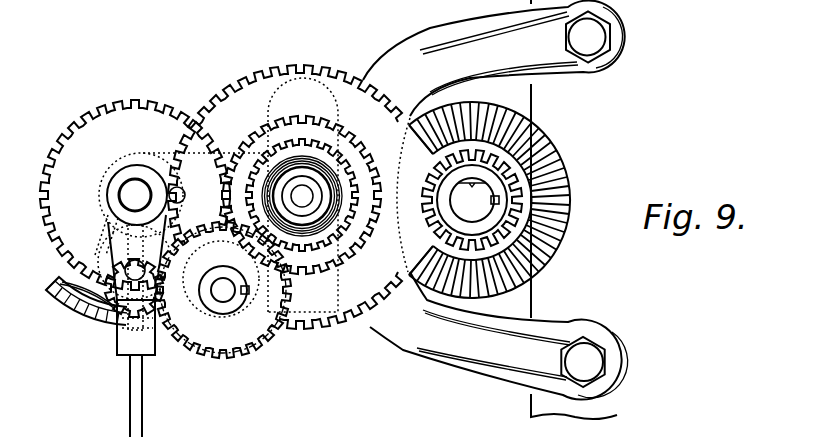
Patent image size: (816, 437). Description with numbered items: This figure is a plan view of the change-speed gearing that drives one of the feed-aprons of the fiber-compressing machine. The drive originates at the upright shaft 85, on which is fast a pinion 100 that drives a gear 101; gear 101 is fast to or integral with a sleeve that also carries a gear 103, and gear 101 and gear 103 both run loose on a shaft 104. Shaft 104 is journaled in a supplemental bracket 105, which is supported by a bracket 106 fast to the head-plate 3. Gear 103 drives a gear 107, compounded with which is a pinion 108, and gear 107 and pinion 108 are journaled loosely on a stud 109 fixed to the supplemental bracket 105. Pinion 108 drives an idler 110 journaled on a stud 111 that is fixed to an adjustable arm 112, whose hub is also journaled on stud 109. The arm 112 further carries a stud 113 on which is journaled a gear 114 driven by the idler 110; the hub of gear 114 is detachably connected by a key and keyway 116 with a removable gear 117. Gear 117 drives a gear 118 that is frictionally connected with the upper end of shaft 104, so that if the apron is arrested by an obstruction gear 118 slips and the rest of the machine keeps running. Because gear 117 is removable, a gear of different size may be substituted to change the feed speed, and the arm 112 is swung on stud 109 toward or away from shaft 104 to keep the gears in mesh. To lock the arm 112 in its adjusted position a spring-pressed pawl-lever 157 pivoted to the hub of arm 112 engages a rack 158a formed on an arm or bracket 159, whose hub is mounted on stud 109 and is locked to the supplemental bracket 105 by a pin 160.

The head-plate 3 is at (574, 209).
The upright shaft 85 is at (450, 182).
The pinion 100 is at (513, 224).
The gear 101 is at (340, 72).
The gear 103 is at (416, 131).
The shaft 104 is at (306, 201).
The supplemental bracket 105 is at (178, 154).
The bracket 106 is at (495, 199).
The gear 107 is at (78, 130).
The pinion 108 is at (107, 170).
The stud 109 is at (119, 196).
The idler 110 is at (108, 300).
The stud 111 is at (125, 270).
The adjustable arm 112 is at (204, 315).
The stud 113 is at (222, 302).
The gear 114 is at (247, 338).
The key and keyway 116 is at (256, 341).
The removable gear 117 is at (250, 300).
The gear 118 is at (308, 325).
The spring-pressed pawl-lever 157 is at (130, 410).
The rack 158a is at (108, 328).
The arm or bracket 159 is at (78, 297).
The pin 160 is at (179, 190).